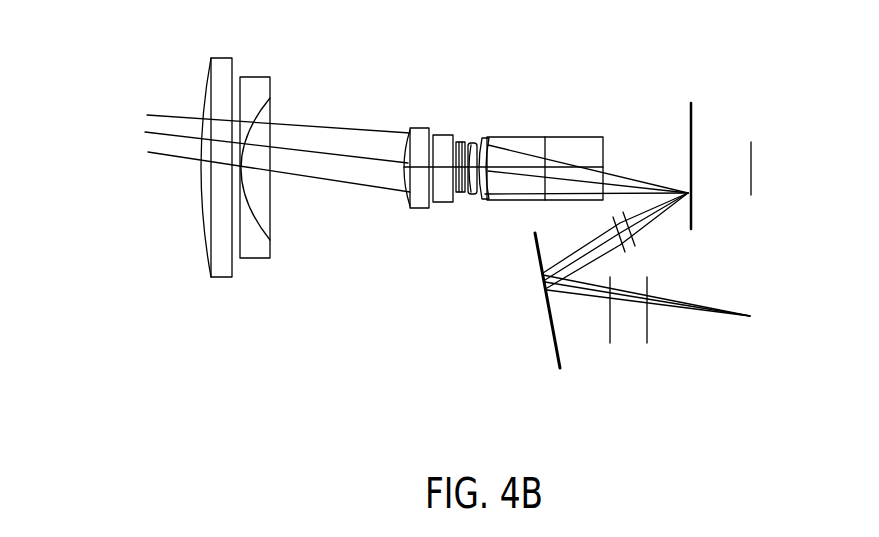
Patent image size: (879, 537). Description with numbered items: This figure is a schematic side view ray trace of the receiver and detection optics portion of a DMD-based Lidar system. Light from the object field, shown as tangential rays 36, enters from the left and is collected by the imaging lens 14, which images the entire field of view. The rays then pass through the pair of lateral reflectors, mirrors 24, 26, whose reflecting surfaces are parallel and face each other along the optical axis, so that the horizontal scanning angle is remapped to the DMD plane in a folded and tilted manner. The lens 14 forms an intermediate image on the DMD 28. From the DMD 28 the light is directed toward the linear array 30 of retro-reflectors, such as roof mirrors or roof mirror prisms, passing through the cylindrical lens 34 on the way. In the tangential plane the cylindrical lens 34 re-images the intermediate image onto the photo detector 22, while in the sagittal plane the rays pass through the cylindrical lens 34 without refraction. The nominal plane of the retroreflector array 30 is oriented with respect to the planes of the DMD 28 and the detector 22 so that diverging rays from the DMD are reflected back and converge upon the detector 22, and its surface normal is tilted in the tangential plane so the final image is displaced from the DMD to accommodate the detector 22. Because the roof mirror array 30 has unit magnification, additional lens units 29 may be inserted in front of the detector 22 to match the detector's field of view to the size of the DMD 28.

The imaging lens 14 is at (225, 278).
The photo detector 22 is at (751, 317).
The lateral reflector (mirror) 24 is at (545, 137).
The lateral reflector (mirror) 26 is at (578, 137).
The DMD 28 is at (693, 117).
The lens units 29 is at (630, 362).
The linear array of retro-reflectors 30 is at (555, 367).
The cylindrical lens 34 is at (641, 244).
The tangential rays 36 is at (137, 131).